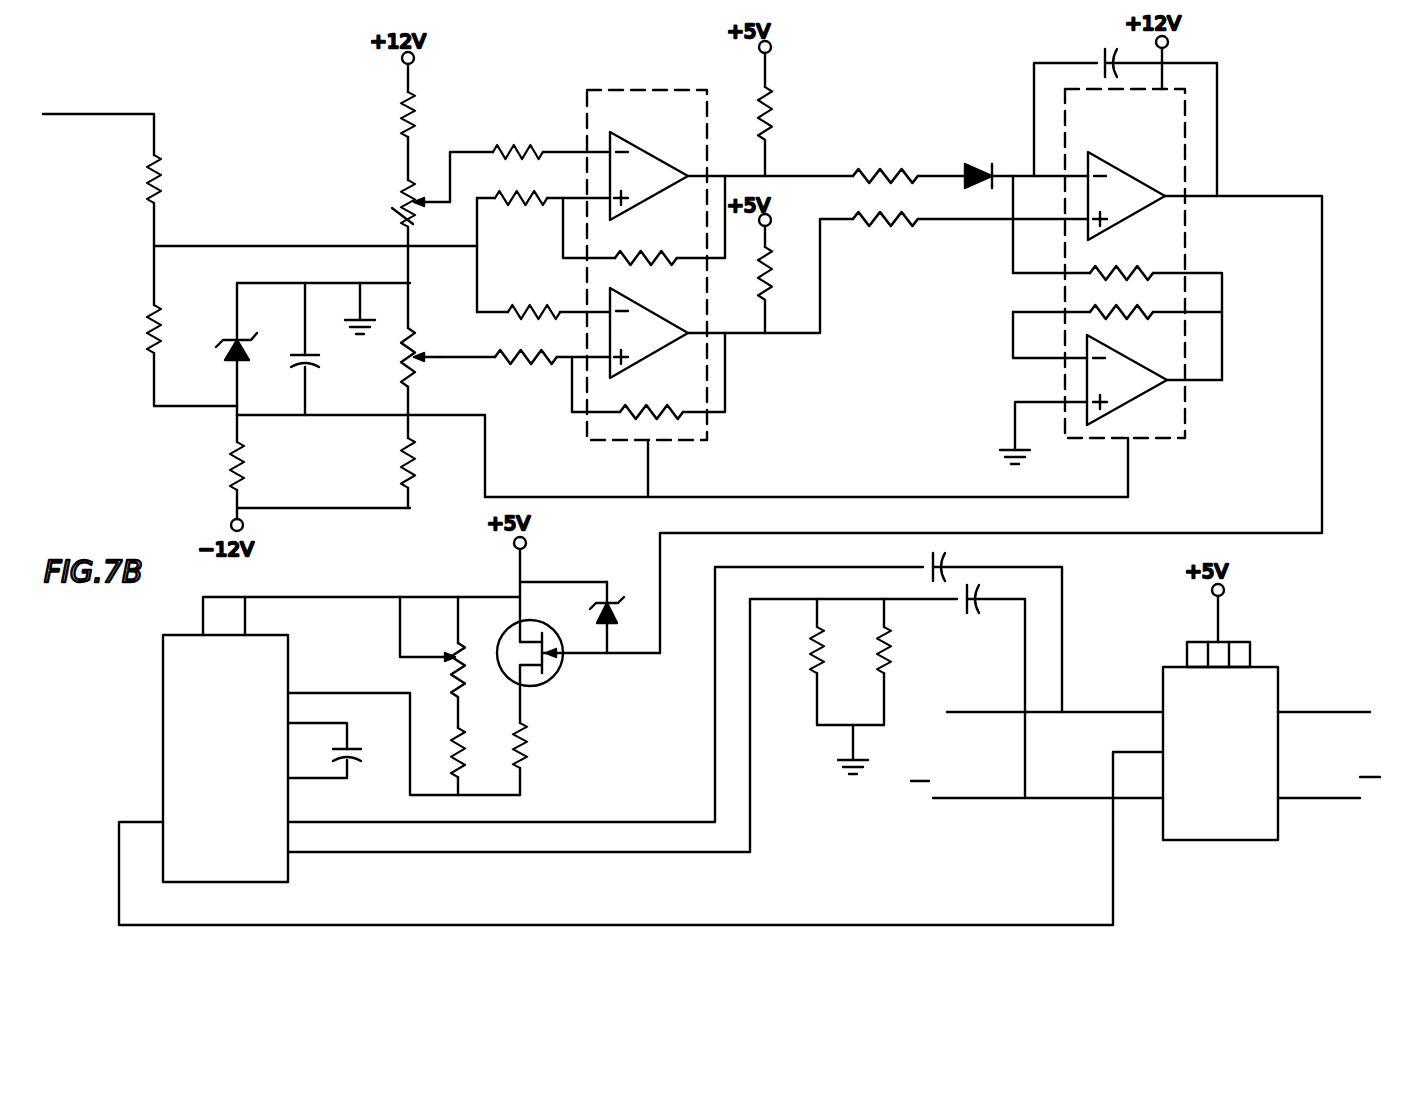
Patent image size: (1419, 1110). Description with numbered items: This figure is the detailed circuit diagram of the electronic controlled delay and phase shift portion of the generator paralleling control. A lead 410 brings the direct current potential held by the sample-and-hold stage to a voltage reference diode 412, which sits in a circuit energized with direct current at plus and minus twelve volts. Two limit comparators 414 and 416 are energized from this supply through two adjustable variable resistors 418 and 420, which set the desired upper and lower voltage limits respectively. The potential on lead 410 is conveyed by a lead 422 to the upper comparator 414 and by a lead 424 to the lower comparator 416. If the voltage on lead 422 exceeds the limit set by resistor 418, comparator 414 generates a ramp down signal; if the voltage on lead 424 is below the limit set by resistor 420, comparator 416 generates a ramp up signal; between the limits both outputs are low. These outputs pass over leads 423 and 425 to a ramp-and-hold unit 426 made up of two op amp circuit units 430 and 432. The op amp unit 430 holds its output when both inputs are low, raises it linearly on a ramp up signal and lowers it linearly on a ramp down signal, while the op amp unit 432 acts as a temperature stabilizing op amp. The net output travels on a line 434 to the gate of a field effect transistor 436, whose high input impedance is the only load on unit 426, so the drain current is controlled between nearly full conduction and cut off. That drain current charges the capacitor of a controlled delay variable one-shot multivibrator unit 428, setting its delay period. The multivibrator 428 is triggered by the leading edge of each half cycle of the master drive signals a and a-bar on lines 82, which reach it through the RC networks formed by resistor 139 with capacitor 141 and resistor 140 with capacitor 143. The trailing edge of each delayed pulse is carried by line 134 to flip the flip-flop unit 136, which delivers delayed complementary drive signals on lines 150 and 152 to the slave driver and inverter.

The lead 410 is at (80, 114).
The voltage reference diode 412 is at (233, 338).
The limit comparator 414 is at (657, 133).
The limit comparator 416 is at (657, 352).
The adjustable variable resistor 418 is at (403, 203).
The adjustable variable resistor 420 is at (420, 362).
The lead 422 is at (481, 216).
The lead 423 is at (780, 176).
The lead 424 is at (479, 291).
The lead 425 is at (819, 336).
The ramp-and-hold unit 426 is at (1187, 258).
The controlled delay variable one-shot multivibrator unit 428 is at (163, 727).
The op amp circuit unit 430 is at (1108, 163).
The op amp circuit unit 432 is at (1138, 397).
The line 434 is at (1320, 455).
The field effect transistor 436 is at (543, 680).
The RC network capacitor 143 is at (937, 563).
The RC network capacitor 141 is at (968, 601).
The RC network resistor 140 is at (812, 662).
The RC network resistor 139 is at (893, 663).
The lines 82 is at (978, 717).
The line 134 is at (119, 903).
The flip-flop unit 136 is at (1232, 842).
The line 150 is at (1338, 714).
The line 152 is at (1335, 800).